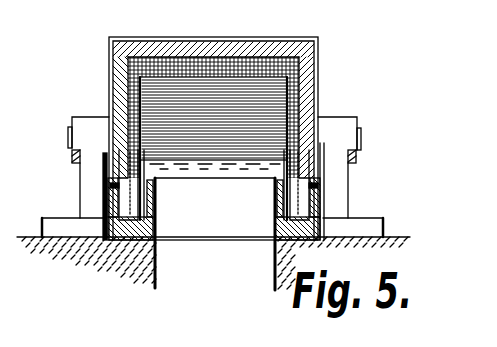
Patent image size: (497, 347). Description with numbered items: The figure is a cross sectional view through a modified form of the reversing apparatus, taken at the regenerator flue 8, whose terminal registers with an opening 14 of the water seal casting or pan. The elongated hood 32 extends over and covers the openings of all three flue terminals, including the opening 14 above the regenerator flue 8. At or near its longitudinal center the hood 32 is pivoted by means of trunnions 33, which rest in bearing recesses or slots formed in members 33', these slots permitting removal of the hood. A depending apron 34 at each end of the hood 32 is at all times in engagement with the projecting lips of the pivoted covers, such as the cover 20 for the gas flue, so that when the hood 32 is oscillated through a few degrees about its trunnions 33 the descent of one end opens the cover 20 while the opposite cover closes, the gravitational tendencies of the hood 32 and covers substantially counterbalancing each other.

The regenerator flue 8 is at (215, 234).
The opening 14 is at (156, 196).
The pivoted cover 20 is at (320, 67).
The elongated hood 32 is at (217, 40).
The trunnions 33 is at (228, 126).
The members 33' is at (224, 184).
The depending apron 34 is at (112, 190).